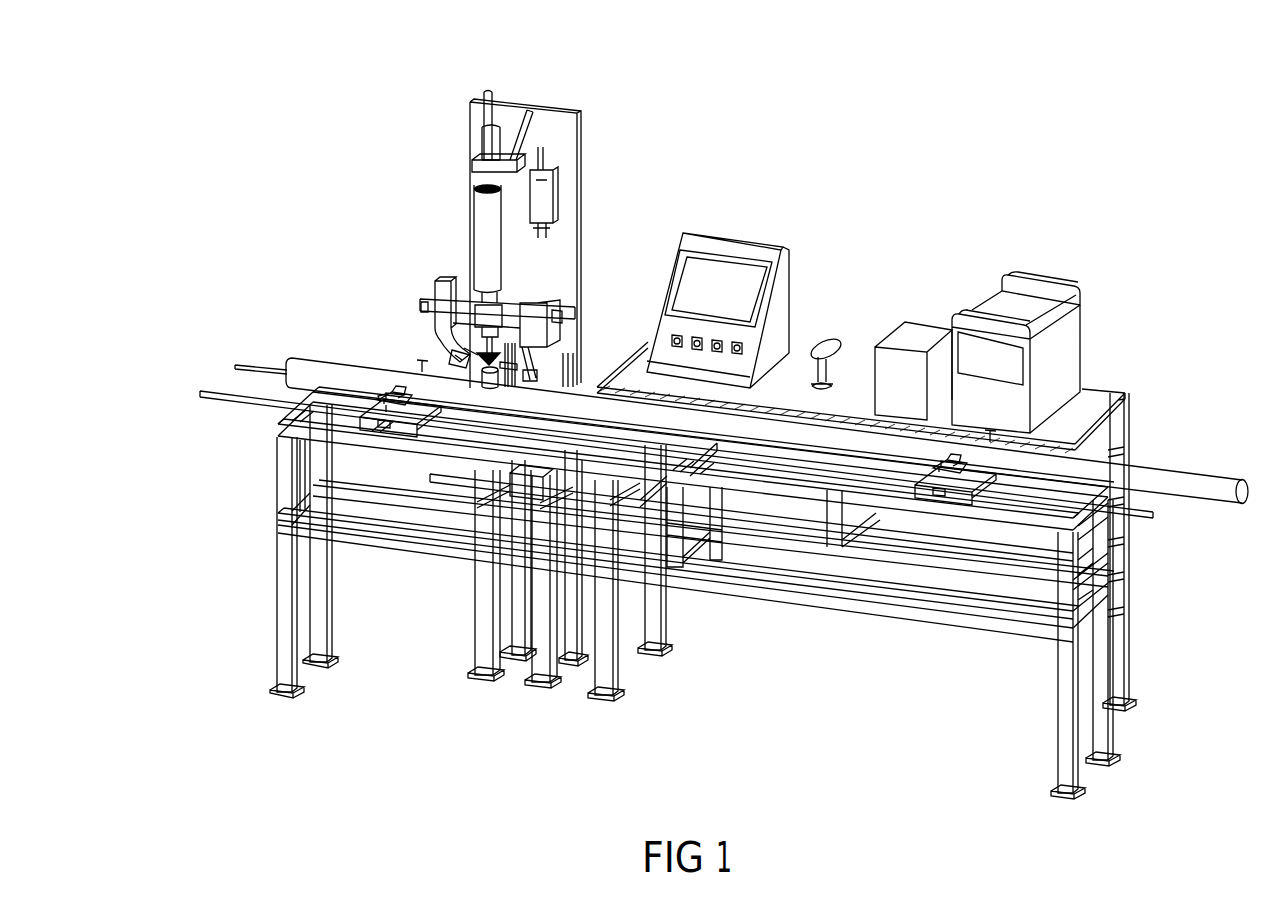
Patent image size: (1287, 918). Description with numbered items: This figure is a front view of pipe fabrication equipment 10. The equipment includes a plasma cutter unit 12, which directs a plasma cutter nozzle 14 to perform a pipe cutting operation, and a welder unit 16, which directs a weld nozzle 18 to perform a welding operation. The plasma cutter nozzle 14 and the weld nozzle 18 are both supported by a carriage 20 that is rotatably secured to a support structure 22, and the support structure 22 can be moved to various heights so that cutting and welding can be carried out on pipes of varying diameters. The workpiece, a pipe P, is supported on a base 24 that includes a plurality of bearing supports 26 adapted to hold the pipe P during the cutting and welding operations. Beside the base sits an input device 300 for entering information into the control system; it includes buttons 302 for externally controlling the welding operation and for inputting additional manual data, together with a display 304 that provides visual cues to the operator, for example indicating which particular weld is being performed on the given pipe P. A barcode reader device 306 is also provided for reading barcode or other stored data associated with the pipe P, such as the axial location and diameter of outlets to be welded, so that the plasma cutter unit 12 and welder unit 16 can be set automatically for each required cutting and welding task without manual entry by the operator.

The pipe fabrication equipment 10 is at (1100, 122).
The plasma cutter unit 12 is at (1073, 283).
The plasma cutter nozzle 14 is at (463, 368).
The welder unit 16 is at (923, 328).
The weld nozzle 18 is at (504, 370).
The carriage 20 is at (432, 293).
The support structure 22 is at (573, 120).
The base 24 is at (287, 420).
The bearing supports 26 is at (380, 430).
The input device 300 is at (796, 272).
The buttons 302 is at (714, 339).
The display 304 is at (740, 243).
The barcode reader device 306 is at (833, 338).
The pipe P is at (334, 366).